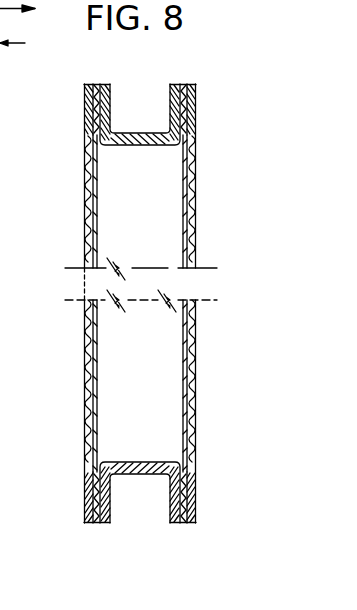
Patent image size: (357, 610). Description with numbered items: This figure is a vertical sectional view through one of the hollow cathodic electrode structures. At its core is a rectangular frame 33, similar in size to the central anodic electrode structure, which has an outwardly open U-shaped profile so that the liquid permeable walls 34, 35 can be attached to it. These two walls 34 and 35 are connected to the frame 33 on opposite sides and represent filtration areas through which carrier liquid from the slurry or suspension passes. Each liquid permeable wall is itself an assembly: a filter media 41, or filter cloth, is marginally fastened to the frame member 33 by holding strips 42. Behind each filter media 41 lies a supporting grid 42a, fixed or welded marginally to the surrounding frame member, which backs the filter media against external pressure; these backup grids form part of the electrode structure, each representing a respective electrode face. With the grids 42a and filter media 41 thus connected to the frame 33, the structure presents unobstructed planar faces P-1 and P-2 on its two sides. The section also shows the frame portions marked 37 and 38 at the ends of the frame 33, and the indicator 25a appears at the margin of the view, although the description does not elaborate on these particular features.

The rectangular frame 33 is at (145, 97).
The left annular flange 37 is at (118, 85).
The right annular flange 38 is at (168, 103).
The holding strips 42 is at (86, 112).
The supporting grid 42a is at (185, 170).
The filter media 41 is at (85, 172).
The liquid permeable wall 34 is at (87, 208).
The liquid permeable wall 35 is at (197, 229).
The planar face P-1 is at (85, 364).
The planar face P-2 is at (197, 365).
The flow direction indicator 25a is at (17, 69).